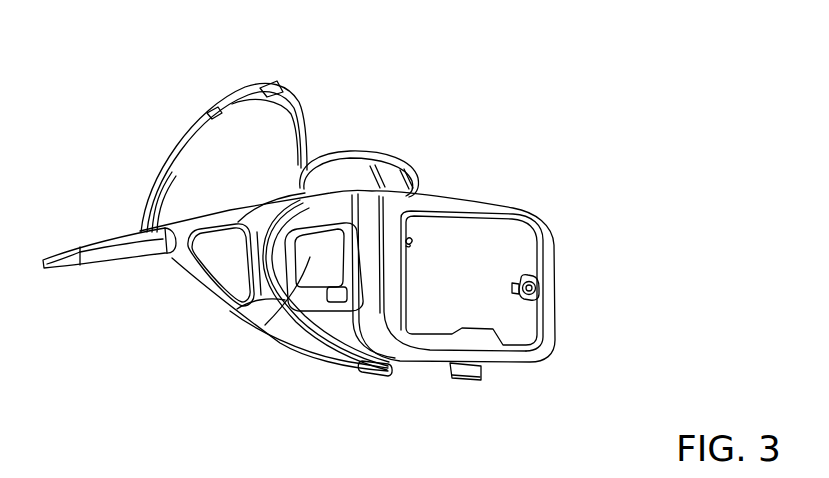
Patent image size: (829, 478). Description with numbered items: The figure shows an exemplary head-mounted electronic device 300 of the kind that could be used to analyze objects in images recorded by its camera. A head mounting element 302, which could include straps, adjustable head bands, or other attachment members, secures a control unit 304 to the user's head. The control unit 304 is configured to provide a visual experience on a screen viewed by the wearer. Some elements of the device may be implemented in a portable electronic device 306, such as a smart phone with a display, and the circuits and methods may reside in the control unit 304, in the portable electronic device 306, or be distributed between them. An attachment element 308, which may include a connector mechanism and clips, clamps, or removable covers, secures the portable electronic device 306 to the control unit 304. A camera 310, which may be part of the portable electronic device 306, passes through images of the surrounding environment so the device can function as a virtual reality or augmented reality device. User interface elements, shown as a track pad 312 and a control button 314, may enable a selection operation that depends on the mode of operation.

The head-mounted electronic device 300 is at (591, 148).
The head mounting element 302 is at (144, 257).
The control unit 304 is at (347, 325).
The portable electronic device 306 is at (500, 252).
The attachment element 308 is at (447, 205).
The camera 310 is at (542, 279).
The track pad 312 is at (237, 311).
The control button 314 is at (281, 334).